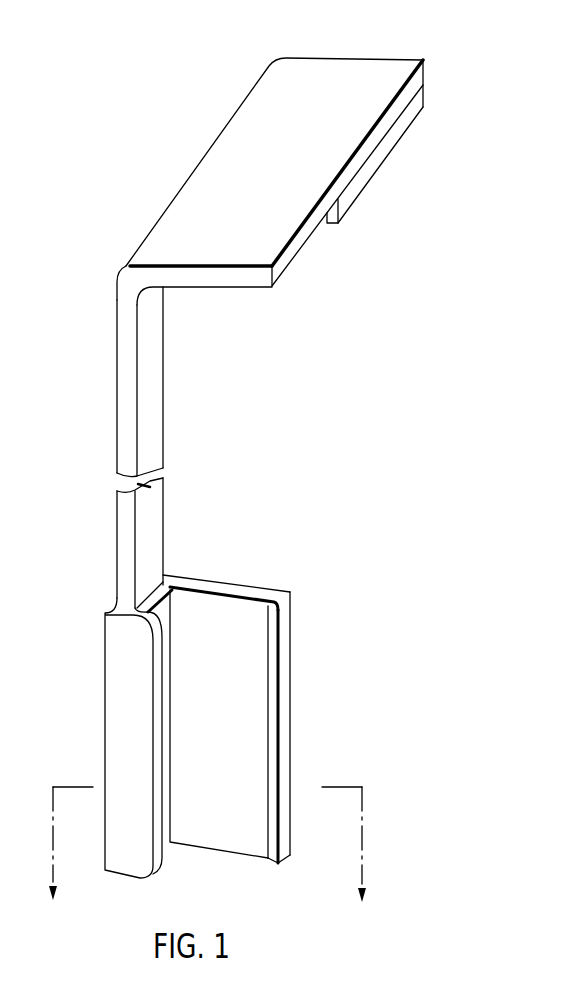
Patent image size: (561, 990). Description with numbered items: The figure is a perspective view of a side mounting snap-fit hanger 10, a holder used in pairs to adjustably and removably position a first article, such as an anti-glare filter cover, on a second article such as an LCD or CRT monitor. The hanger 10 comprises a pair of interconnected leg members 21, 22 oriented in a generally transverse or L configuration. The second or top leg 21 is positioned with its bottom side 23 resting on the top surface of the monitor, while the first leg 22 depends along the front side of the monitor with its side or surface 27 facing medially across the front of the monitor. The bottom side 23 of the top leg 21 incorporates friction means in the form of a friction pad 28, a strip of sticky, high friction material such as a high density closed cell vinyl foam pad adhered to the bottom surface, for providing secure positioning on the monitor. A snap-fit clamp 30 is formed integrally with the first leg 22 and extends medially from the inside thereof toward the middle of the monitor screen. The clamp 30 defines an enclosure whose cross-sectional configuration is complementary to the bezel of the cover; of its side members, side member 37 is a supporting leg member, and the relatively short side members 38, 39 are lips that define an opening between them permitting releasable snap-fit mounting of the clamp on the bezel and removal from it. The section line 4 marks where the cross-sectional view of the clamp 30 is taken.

The side mount hanger 10 is at (332, 98).
The top leg 21 is at (178, 248).
The first leg 22 is at (165, 425).
The bottom side 23 is at (355, 197).
The side surface 27 is at (153, 527).
The friction pad 28 is at (390, 142).
The snap-fit clamp 30 is at (234, 697).
The side member 37 is at (242, 592).
The side member 38 is at (128, 720).
The side member 39 is at (287, 688).
The section line 4- 4 is at (206, 853).